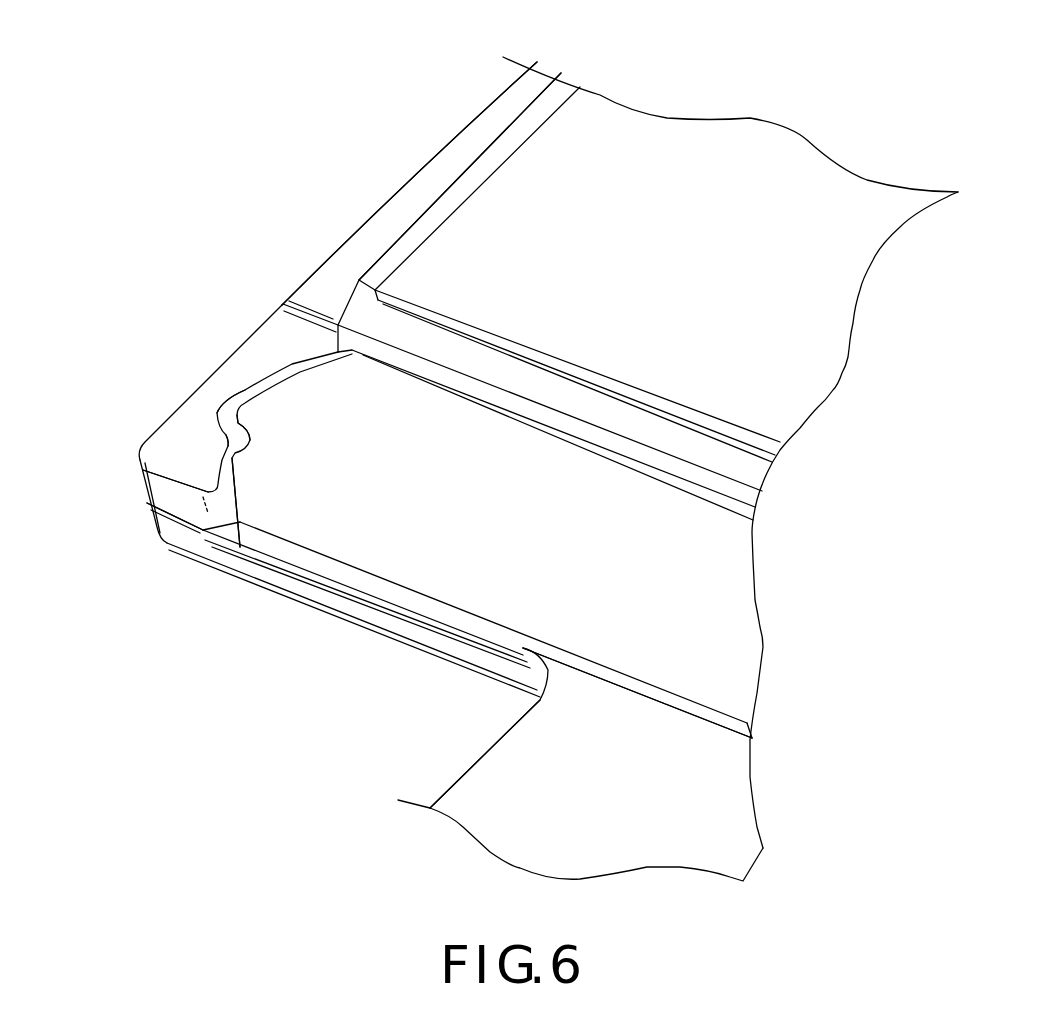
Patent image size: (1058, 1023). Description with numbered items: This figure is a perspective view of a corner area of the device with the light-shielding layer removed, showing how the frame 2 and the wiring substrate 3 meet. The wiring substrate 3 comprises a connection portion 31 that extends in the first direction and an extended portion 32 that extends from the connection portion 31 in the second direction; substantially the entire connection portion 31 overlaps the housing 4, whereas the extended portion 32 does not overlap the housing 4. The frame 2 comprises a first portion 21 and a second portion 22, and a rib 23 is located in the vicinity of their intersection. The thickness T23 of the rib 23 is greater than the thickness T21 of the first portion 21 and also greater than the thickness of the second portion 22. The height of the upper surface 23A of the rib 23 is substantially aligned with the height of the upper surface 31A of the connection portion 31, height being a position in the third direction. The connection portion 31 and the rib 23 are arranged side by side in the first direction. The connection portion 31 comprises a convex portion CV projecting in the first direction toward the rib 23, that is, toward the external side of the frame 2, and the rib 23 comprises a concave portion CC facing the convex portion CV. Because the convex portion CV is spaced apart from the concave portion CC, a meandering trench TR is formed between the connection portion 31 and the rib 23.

The frame 2 is at (518, 108).
The second portion 22 is at (462, 158).
The rib 23 is at (266, 340).
The upper surface of the rib 23A is at (182, 438).
The meandering trench TR is at (226, 384).
The concave portion CC is at (202, 396).
The convex portion CV is at (260, 403).
The thickness of the rib T23 is at (143, 490).
The thickness of the first portion T21 is at (233, 513).
The first portion 21 is at (228, 545).
The housing 4 is at (298, 585).
The wiring substrate 3 is at (586, 606).
The connection portion 31 is at (381, 553).
The upper surface of the connection portion 31A is at (445, 568).
The extended portion 32 is at (470, 794).